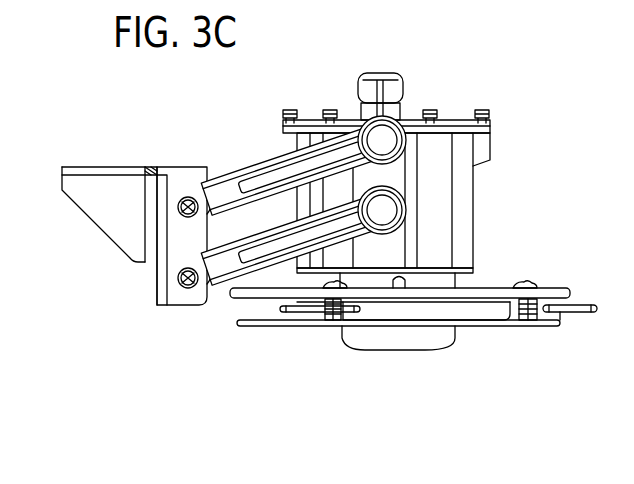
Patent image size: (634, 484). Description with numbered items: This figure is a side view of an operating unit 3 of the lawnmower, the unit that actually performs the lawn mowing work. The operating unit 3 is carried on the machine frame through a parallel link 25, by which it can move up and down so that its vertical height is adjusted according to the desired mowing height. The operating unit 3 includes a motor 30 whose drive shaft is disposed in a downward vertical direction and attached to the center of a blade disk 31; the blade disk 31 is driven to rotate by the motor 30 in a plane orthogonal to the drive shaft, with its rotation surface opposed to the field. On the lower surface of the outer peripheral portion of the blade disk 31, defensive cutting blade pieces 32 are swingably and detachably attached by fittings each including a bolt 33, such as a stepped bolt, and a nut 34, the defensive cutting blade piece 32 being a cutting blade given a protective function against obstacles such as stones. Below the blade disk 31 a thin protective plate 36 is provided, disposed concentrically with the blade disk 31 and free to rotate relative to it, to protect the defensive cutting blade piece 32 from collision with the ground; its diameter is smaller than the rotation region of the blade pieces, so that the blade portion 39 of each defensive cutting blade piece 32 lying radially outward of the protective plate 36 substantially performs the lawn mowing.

The operating unit 3 is at (456, 116).
The parallel link 25 is at (257, 242).
The motor 30 is at (438, 200).
The blade disk 31 is at (487, 290).
The defensive cutting blade piece 32 is at (292, 313).
The bolt 33 is at (335, 322).
The nut 34 is at (350, 285).
The protective plate 36 is at (488, 327).
The blade portion 39 is at (583, 314).